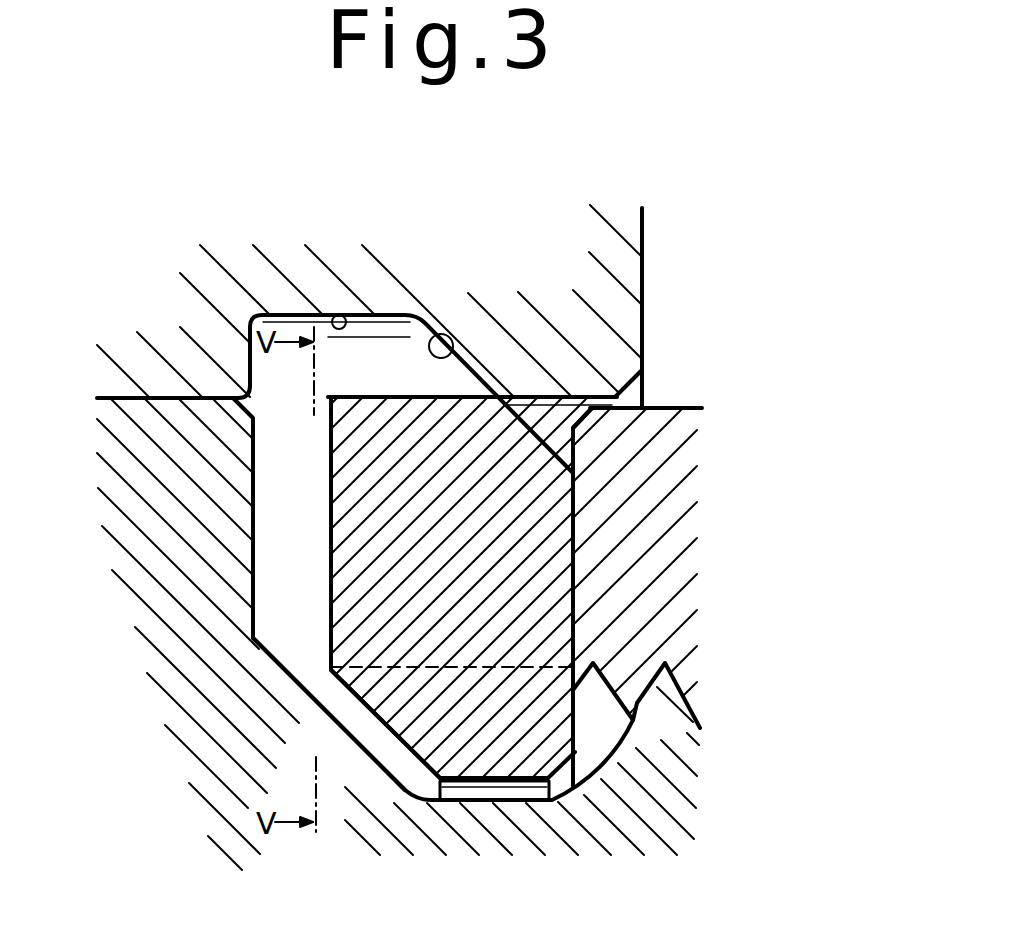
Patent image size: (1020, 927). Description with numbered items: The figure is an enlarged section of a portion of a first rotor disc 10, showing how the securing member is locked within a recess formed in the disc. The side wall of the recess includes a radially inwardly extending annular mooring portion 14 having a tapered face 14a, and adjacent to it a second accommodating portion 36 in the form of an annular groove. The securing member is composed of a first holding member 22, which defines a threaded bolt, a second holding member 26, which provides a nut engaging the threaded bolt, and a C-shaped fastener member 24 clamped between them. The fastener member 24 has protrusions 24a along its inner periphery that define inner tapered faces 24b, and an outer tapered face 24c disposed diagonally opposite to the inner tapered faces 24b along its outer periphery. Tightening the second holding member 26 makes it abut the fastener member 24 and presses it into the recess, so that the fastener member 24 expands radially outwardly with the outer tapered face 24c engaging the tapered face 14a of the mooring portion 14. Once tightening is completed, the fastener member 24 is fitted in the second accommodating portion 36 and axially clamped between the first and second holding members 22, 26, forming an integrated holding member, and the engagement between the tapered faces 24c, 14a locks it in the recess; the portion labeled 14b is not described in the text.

The first rotor disc 10 is at (455, 178).
The mooring portion 14 is at (603, 338).
The tapered face of the mooring portion 14a is at (460, 334).
The side wall of cover 14b is at (643, 276).
The first holding member 22 is at (319, 847).
The fastener member 24 is at (345, 497).
The protrusions 24a is at (500, 685).
The inner tapered faces 24b is at (392, 741).
The outer tapered face 24c is at (528, 430).
The second holding member 26 is at (632, 538).
The second accommodating portion 36 is at (352, 312).